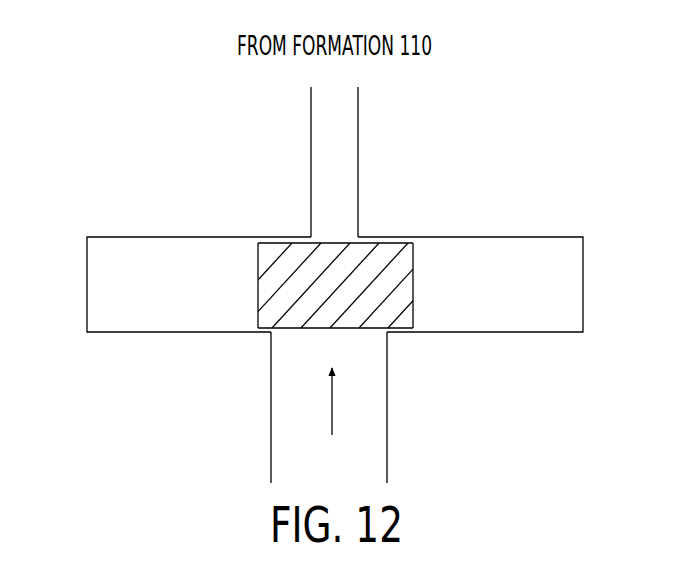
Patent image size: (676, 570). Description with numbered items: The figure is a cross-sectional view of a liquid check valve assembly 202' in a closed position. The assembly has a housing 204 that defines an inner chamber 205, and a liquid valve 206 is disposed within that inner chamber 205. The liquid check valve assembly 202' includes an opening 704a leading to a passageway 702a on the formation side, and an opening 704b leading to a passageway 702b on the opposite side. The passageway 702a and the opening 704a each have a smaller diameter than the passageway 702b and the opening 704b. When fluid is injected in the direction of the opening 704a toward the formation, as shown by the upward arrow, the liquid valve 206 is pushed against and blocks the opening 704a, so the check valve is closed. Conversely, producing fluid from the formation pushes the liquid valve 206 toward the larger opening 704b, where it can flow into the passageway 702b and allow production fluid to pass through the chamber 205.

The liquid check valve assembly 202' is at (307, 266).
The housing 204 is at (146, 232).
The inner chamber 205 is at (105, 292).
The liquid valve 206 is at (433, 290).
The passageway 702a is at (329, 130).
The passageway 702b is at (287, 450).
The opening 704a is at (329, 231).
The opening 704b is at (287, 344).